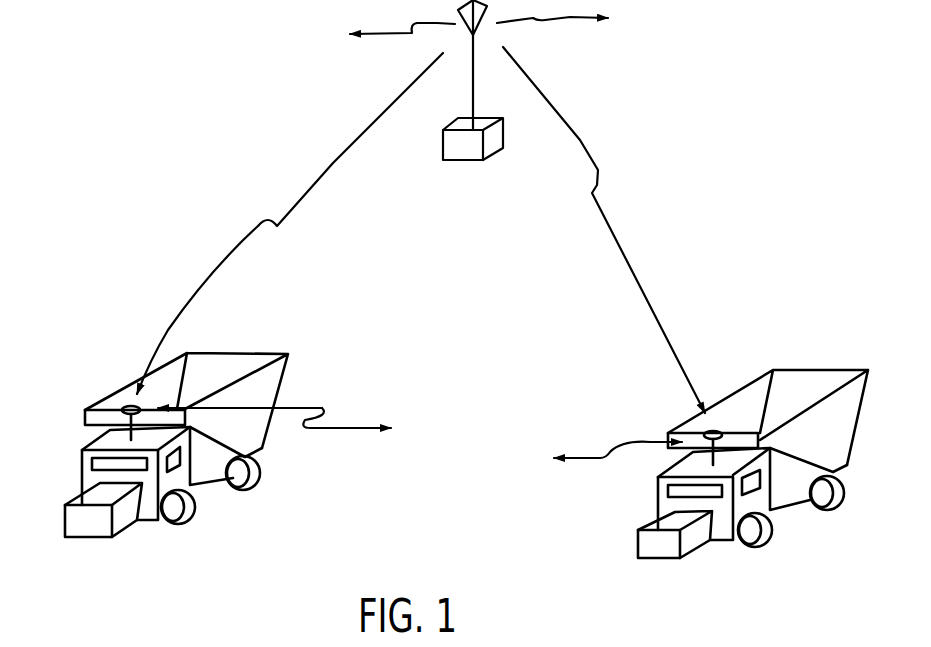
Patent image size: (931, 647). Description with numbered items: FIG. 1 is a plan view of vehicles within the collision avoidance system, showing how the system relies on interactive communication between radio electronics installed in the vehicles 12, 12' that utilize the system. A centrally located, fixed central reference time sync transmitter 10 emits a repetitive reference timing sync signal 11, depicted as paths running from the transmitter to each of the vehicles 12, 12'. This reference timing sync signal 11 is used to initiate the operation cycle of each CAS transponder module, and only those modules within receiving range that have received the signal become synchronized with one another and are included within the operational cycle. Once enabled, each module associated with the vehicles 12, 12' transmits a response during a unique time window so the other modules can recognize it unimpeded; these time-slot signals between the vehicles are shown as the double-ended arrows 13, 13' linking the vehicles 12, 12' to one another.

The central reference time sync transmitter 10 is at (503, 150).
The reference timing sync signal 11 is at (225, 253).
The vehicle 12 is at (216, 457).
The vehicle 12' is at (753, 455).
The time-slot signals between vehicles 13 is at (345, 442).
The time-slot signals between vehicles 13' is at (618, 434).